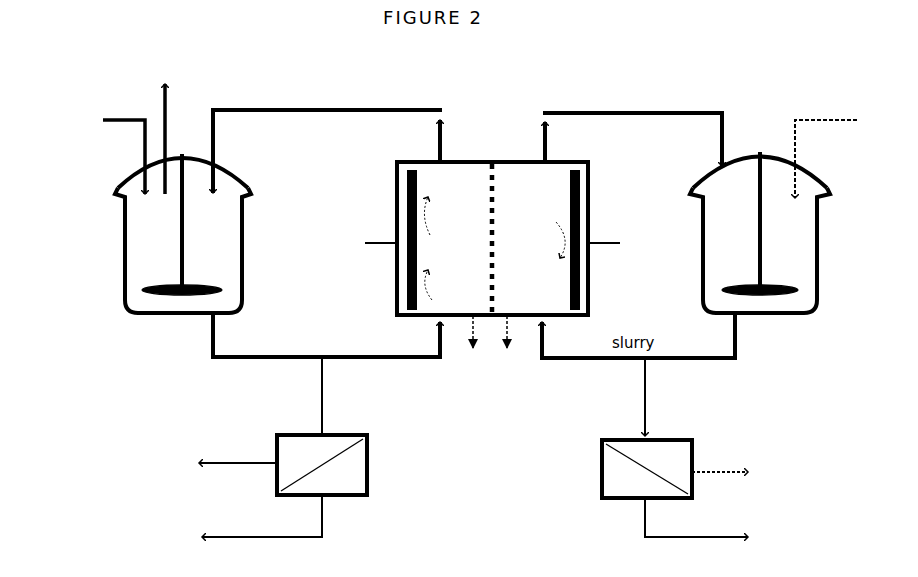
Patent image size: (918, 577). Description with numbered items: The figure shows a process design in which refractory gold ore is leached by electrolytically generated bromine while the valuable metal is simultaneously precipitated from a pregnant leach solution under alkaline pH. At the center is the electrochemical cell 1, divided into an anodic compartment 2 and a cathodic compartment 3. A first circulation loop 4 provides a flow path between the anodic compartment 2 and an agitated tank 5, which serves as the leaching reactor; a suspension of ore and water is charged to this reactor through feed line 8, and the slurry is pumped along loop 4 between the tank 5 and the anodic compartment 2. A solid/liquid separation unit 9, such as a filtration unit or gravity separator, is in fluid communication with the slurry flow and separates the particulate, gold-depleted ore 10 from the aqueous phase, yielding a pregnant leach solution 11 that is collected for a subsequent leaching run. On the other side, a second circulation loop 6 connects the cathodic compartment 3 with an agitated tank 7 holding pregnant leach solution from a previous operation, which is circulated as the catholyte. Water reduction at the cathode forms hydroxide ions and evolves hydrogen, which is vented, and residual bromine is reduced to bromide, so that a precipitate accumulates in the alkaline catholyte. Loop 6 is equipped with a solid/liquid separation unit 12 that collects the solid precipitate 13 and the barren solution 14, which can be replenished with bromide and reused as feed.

The electrochemical cell 1 is at (492, 158).
The anodic compartment 2 is at (509, 358).
The cathodic compartment 3 is at (471, 358).
The first circulation loop 4 is at (632, 124).
The agitated tank 5 is at (823, 311).
The second circulation loop 6 is at (327, 137).
The agitated tank 7 is at (125, 295).
The feed line 8 is at (838, 124).
The solid/liquid separation unit 9 is at (600, 500).
The gold-depleted ore 10 is at (786, 472).
The pregnant leach solution 11 is at (748, 525).
The solid/liquid separation unit 12 is at (362, 497).
The solid precipitate 13 is at (152, 457).
The barren solution 14 is at (207, 532).